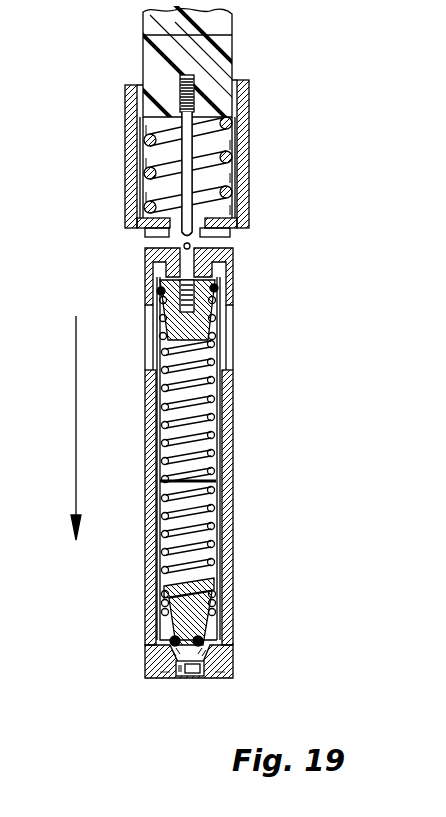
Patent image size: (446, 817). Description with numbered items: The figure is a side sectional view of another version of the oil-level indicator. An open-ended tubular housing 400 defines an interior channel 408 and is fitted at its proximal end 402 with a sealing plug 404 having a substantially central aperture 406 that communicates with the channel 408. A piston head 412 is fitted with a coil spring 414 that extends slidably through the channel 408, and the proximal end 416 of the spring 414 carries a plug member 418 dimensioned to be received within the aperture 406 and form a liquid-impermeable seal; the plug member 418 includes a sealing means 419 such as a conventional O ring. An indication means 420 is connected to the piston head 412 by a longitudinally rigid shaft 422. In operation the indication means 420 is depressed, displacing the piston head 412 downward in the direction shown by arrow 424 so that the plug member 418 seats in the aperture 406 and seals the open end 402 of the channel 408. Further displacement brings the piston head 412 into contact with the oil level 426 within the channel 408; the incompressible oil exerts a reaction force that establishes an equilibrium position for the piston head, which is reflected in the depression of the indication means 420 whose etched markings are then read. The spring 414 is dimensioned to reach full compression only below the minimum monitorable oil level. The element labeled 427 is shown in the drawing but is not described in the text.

The tubular housing 400 is at (233, 527).
The proximal end 402 is at (226, 679).
The sealing plug 404 is at (164, 679).
The aperture 406 is at (187, 679).
The interior channel 408 is at (205, 547).
The piston head 412 is at (213, 316).
The coil spring 414 is at (200, 587).
The proximal end of spring 416 is at (215, 606).
The plug member 418 is at (163, 604).
The sealing means 419 is at (170, 641).
The indication means 420 is at (232, 35).
The shaft 422 is at (233, 257).
The arrow 424 is at (76, 463).
The oil level 426 is at (228, 478).
The threaded shaft 427 is at (247, 124).